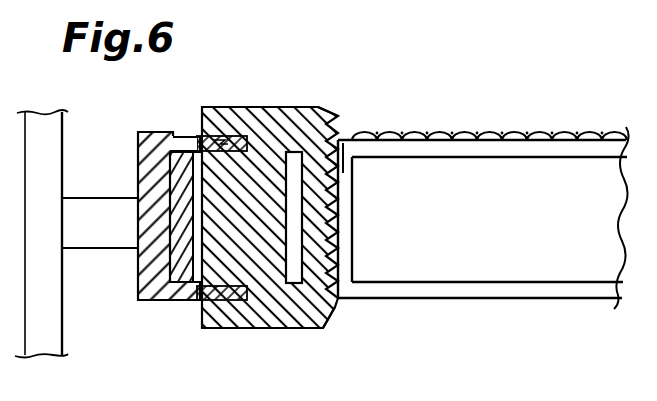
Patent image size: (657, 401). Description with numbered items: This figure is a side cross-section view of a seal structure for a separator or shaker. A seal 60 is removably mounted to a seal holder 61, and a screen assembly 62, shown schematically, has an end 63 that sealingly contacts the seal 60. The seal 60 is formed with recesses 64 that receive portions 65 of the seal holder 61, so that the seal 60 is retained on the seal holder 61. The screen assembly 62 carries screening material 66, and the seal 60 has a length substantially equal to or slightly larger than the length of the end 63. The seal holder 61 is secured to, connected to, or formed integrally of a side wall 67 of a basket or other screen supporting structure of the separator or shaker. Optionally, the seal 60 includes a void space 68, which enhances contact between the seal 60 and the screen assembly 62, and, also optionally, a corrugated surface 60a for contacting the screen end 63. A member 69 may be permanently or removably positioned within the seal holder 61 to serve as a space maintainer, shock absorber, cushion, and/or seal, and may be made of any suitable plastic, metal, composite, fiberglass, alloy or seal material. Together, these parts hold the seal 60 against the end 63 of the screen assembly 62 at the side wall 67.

The seal 60 is at (323, 120).
The corrugated surface 60a is at (335, 310).
The seal holder 61 is at (145, 175).
The screen assembly 62 is at (527, 152).
The end 63 is at (343, 145).
The recesses 64 is at (232, 130).
The portions 65 is at (202, 142).
The screening material 66 is at (475, 138).
The side wall 67 is at (58, 322).
The void space 68 is at (297, 268).
The member 69 is at (182, 234).